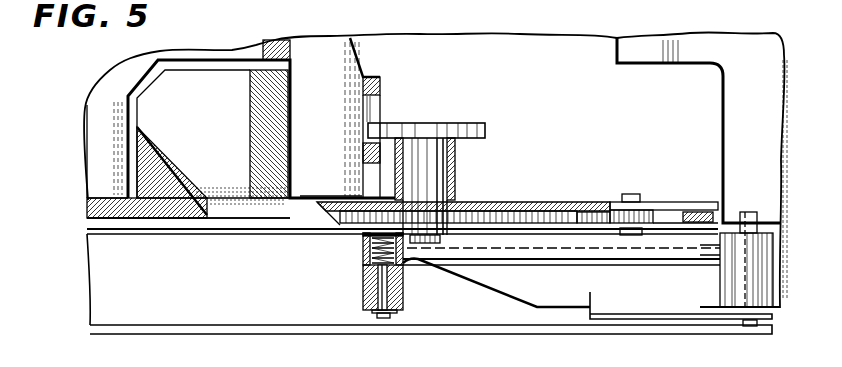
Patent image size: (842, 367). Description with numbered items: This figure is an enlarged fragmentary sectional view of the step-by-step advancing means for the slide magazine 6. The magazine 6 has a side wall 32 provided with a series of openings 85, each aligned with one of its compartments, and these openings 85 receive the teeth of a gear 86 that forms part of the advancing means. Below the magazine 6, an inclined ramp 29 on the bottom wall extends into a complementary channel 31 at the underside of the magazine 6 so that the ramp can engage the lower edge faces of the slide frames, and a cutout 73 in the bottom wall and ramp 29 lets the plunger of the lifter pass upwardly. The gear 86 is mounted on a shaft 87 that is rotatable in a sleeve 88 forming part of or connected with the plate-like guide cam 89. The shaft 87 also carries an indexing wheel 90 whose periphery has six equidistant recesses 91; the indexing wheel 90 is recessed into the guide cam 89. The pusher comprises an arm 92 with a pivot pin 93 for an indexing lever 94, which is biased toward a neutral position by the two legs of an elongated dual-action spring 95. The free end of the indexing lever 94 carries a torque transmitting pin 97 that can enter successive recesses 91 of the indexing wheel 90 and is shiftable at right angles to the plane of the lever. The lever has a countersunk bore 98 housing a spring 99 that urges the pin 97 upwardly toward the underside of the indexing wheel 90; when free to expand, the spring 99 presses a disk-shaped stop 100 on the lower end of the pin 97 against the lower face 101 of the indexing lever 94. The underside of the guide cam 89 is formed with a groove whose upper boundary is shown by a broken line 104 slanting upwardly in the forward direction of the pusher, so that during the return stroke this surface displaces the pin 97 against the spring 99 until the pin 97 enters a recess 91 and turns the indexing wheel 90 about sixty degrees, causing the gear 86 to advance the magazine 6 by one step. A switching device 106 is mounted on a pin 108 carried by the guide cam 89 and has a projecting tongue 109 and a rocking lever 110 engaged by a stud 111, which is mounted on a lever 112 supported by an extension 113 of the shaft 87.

The magazine 6 is at (340, 55).
The inclined ramp 29 is at (252, 120).
The complementary channel 31 is at (221, 59).
The side wall 32 is at (381, 84).
The cutout 73 is at (146, 106).
The openings 85 is at (376, 102).
The gear 86 is at (426, 128).
The shaft 87 is at (450, 150).
The sleeve 88 is at (456, 173).
The guide cam 89 is at (537, 203).
The indexing wheel 90 is at (390, 198).
The recesses 91 is at (471, 237).
The arm 92 is at (734, 124).
The pivot pin 93 is at (778, 248).
The indexing lever 94 is at (703, 297).
The dual-action spring 95 is at (645, 318).
The torque transmitting pin 97 is at (362, 160).
The countersunk bore 98 is at (366, 258).
The spring 99 is at (366, 242).
The disk-shaped stop 100 is at (390, 316).
The lower face 101 is at (366, 300).
The broken line 104 is at (563, 200).
The switching device 106 is at (617, 194).
The pin 108 is at (651, 224).
The projecting tongue 109 is at (663, 203).
The rocking lever 110 is at (611, 225).
The stud 111 is at (580, 249).
The lever 112 is at (88, 240).
The extension 113 is at (443, 224).